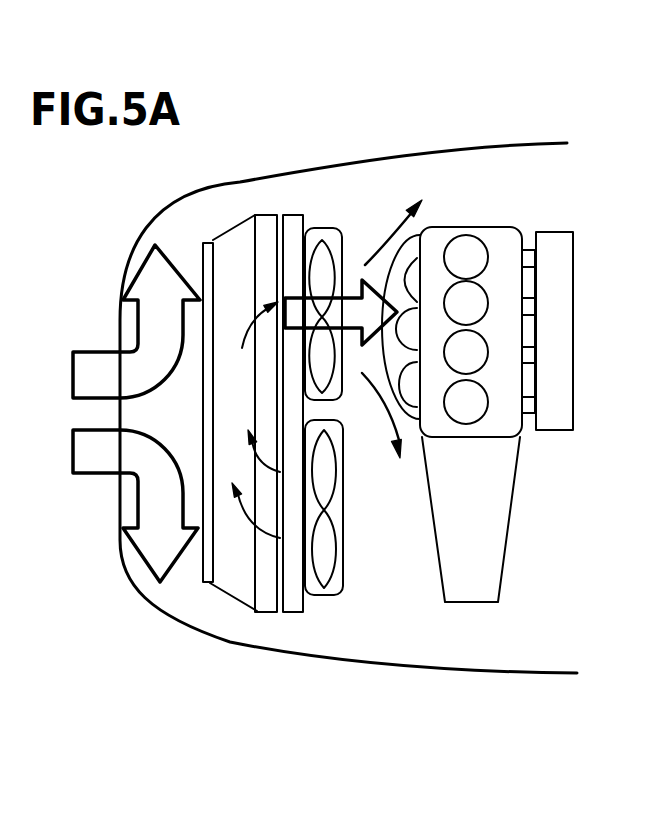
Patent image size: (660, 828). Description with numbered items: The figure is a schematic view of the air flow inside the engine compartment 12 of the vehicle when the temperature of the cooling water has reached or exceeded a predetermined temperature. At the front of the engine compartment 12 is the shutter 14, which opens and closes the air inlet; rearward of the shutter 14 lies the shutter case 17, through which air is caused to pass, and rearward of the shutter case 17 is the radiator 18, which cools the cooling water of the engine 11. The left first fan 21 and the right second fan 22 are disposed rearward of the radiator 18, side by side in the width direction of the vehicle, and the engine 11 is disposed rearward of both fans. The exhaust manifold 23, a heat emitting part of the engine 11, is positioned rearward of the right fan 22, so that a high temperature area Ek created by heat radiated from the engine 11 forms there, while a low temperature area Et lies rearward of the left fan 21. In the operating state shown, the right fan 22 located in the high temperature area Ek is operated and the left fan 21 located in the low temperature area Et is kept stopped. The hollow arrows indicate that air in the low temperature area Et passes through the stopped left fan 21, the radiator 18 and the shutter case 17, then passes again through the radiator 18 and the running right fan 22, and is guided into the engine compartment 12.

The engine 11 is at (468, 227).
The engine compartment 12 is at (470, 668).
The shutter 14 is at (207, 565).
The shutter case 17 is at (240, 593).
The radiator 18 is at (295, 613).
The left first fan 21 is at (327, 573).
The right second fan 22 is at (315, 228).
The exhaust manifold 23 is at (387, 258).
The high temperature area Ek is at (352, 278).
The low temperature area Et is at (360, 518).